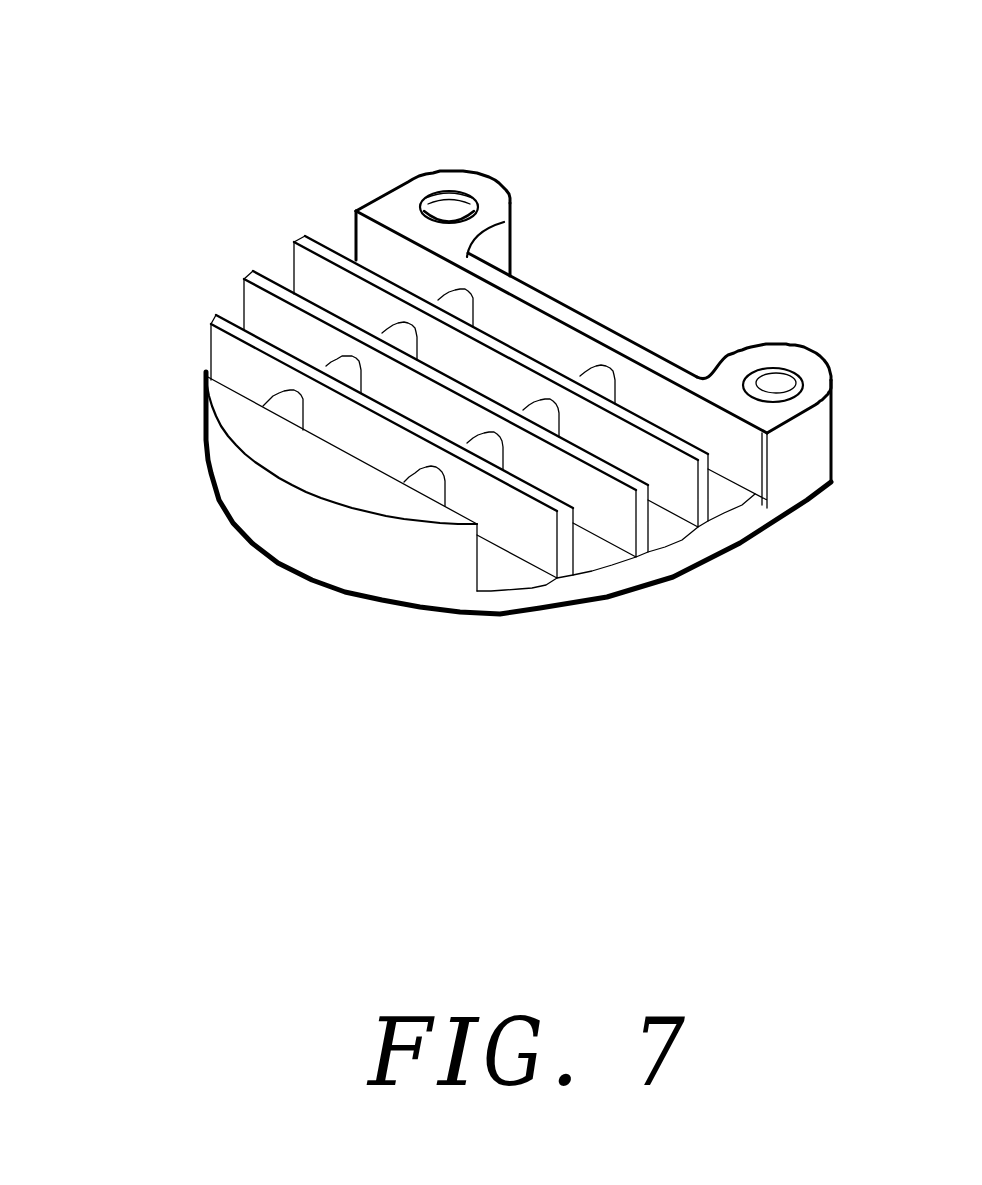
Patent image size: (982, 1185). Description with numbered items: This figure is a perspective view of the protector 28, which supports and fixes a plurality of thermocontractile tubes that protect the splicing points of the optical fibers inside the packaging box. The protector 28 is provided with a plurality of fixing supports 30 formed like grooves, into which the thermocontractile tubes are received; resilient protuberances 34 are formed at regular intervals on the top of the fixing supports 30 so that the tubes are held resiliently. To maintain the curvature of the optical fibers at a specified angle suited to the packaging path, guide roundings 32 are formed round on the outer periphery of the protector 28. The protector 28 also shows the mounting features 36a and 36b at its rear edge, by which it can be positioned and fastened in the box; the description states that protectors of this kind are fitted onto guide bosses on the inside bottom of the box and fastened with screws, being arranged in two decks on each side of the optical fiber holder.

The protector 28 is at (219, 141).
The fixing supports 30 is at (600, 563).
The guide roundings 32 is at (217, 442).
The resilient protuberances 34 is at (598, 382).
The mounting hole 36a is at (779, 387).
The mounting hole 36b is at (450, 205).